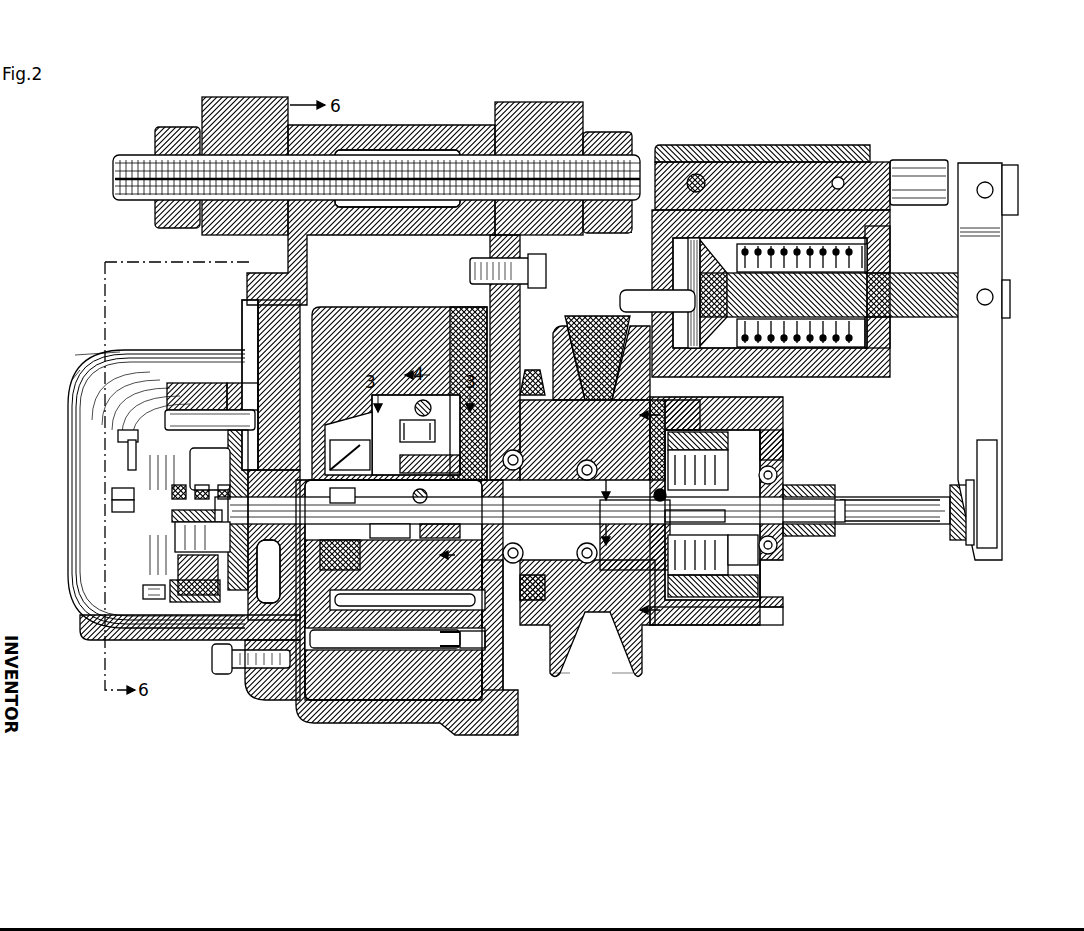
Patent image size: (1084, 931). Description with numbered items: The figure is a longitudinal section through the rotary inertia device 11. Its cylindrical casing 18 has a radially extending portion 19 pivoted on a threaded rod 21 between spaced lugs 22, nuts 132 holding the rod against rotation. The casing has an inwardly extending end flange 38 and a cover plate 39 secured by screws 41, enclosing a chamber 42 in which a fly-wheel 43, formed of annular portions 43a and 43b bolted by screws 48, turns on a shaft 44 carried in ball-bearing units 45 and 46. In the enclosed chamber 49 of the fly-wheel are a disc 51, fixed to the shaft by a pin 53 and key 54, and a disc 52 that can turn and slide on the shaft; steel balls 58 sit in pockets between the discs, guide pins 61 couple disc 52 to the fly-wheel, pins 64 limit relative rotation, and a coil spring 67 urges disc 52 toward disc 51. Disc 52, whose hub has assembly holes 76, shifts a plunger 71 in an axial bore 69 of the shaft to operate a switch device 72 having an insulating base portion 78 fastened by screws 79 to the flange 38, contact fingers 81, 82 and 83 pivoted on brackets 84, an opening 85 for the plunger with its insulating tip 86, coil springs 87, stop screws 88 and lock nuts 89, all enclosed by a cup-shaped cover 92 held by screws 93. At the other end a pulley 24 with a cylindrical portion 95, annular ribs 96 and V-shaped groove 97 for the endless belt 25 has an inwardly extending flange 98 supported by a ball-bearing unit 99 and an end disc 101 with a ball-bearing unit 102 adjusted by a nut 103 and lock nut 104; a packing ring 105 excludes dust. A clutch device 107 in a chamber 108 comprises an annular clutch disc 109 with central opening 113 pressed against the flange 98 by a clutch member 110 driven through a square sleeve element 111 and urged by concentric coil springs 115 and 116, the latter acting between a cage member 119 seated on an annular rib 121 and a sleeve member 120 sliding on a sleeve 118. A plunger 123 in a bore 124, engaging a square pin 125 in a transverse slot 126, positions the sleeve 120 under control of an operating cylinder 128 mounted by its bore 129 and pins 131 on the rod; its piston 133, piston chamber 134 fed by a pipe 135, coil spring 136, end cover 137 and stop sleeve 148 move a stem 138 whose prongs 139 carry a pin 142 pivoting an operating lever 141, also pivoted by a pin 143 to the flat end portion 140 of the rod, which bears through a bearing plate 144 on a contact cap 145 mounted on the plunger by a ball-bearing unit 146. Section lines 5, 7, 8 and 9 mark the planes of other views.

The section line 5 is at (596, 512).
The section line 7 is at (650, 512).
The clutch plate 8 is at (325, 470).
The section line 9 is at (456, 576).
The rotary inertia device 11 is at (422, 730).
The cylindrical casing 18 is at (370, 723).
The radially extending portion 19 is at (405, 112).
The threaded rod 21 is at (113, 176).
The spaced lugs 22 is at (257, 97).
The pulley 24 is at (668, 625).
The V-shaped endless belt 25 is at (585, 318).
The end flange 38 is at (274, 545).
The cover plate 39 is at (503, 662).
The screws 41 is at (546, 268).
The chamber 42 is at (325, 700).
The fly-wheel 43 is at (325, 305).
The annular portion 43a is at (360, 310).
The annular portion 43b is at (455, 305).
The shaft 44 is at (880, 523).
The ball-bearing unit 45 is at (268, 571).
The ball-bearing unit 46 is at (520, 480).
The screws 48 is at (270, 695).
The enclosed chamber 49 is at (280, 355).
The disc 51 is at (460, 464).
The disc 52 is at (350, 430).
The pin 53 is at (428, 500).
The key 54 is at (430, 490).
The steel ball 58 is at (435, 431).
The guide pins 61 is at (375, 594).
The pins 64 is at (440, 530).
The coil spring 67 is at (340, 555).
The axial bore 69 is at (390, 530).
The plunger 71 is at (240, 470).
The switch device 72 is at (172, 400).
The holes 76 is at (350, 509).
The base portion 78 is at (215, 390).
The screws 79 is at (279, 385).
The contact finger 81 is at (202, 530).
The contact finger 82 is at (185, 520).
The contact finger 83 is at (175, 500).
The metallic brackets 84 is at (150, 470).
The opening 85 is at (198, 574).
The insulating tip 86 is at (210, 469).
The coil spring 87 is at (160, 420).
The stop screw 88 is at (200, 602).
The lock nut 89 is at (158, 599).
The cup-shaped cover 92 is at (70, 405).
The screws 93 is at (212, 655).
The cylindrical portion 95 is at (740, 625).
The annular ribs 96 is at (610, 668).
The V-shaped groove 97 is at (572, 625).
The inwardly extending flange 98 is at (553, 380).
The ball-bearing unit 99 is at (580, 480).
The end disc 101 is at (783, 590).
The ball-bearing unit 102 is at (785, 485).
The nut 103 is at (790, 536).
The lock nut 104 is at (830, 536).
The packing ring 105 is at (525, 600).
The clutch device 107 is at (740, 410).
The chamber 108 is at (783, 568).
The clutch disc 109 is at (650, 400).
The clutch member 110 is at (688, 405).
The sleeve element 111 is at (740, 560).
The central opening 113 is at (624, 545).
The coil spring 115 is at (706, 467).
The coil spring 116 is at (706, 438).
The sleeve 118 is at (777, 470).
The cage member 119 is at (713, 586).
The sleeve member 120 is at (780, 440).
The annular rib 121 is at (684, 567).
The plunger 123 is at (858, 505).
The bore 124 is at (900, 505).
The pin 125 is at (686, 515).
The transverse slot 126 is at (673, 494).
The operating cylinder 128 is at (862, 380).
The bore 129 is at (742, 162).
The pins 131 is at (690, 145).
The nuts 132 is at (176, 127).
The piston 133 is at (700, 243).
The piston chamber 134 is at (690, 263).
The pipe 135 is at (620, 300).
The coil spring 136 is at (860, 262).
The end cover 137 is at (880, 352).
The stem 138 is at (915, 318).
The prongs 139 is at (1010, 282).
The flat end portion 140 is at (1016, 145).
The operating lever 141 is at (993, 400).
The pin 142 is at (993, 297).
The pin 143 is at (993, 190).
The bearing plate 144 is at (997, 488).
The contact cap 145 is at (968, 465).
The ball-bearing unit 146 is at (958, 540).
The stop sleeve 148 is at (888, 245).